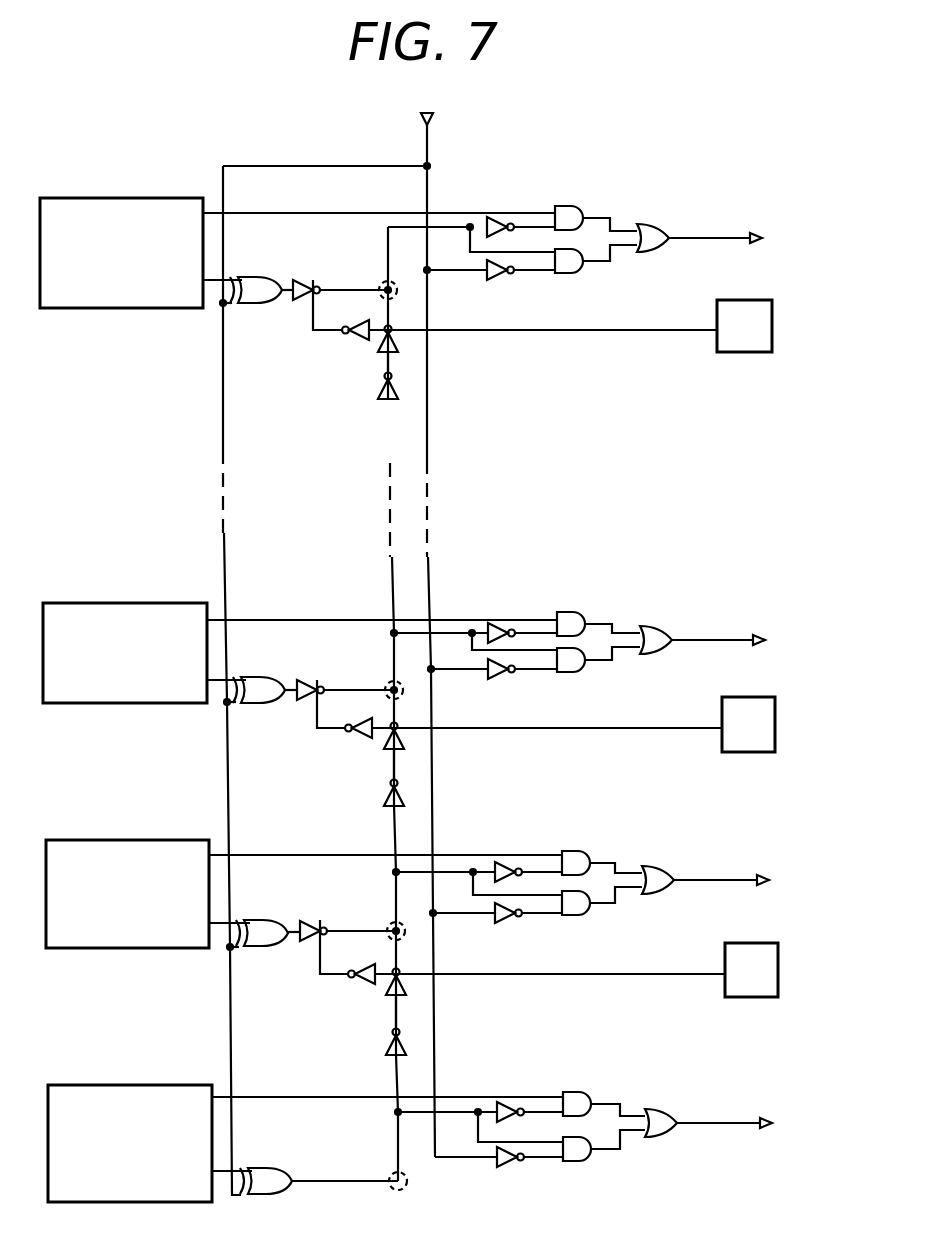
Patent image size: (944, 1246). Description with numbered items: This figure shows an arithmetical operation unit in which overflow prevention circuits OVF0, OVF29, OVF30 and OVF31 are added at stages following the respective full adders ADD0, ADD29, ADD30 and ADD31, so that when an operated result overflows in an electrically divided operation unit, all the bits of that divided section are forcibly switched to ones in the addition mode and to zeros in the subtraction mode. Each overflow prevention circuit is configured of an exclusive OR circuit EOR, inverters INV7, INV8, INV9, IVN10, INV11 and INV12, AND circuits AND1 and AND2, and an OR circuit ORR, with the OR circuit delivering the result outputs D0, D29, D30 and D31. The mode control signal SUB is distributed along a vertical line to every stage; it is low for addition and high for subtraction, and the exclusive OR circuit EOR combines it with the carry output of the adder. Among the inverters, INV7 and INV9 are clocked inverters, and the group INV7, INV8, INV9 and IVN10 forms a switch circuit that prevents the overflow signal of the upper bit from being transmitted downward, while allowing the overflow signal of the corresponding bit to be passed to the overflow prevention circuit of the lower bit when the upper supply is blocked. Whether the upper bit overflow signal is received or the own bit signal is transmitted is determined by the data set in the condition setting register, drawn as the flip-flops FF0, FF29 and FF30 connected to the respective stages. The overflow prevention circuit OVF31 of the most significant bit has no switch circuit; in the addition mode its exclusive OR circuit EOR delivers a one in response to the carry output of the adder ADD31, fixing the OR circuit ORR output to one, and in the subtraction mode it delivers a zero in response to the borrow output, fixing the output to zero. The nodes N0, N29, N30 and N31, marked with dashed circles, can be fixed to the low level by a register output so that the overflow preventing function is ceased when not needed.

The mode control signal SUB is at (424, 620).
The full adder ADD0 is at (121, 253).
The full adder ADD29 is at (125, 653).
The full adder ADD30 is at (127, 894).
The full adder ADD31 is at (130, 1143).
The exclusive OR circuit EOR is at (262, 303).
The clocked inverter INV7 is at (313, 280).
The inverter INV8 is at (352, 342).
The clocked inverter INV9 is at (398, 343).
The inverter IVN10 is at (398, 391).
The inverter INV11 is at (494, 217).
The inverter INV12 is at (496, 281).
The AND circuit AND1 is at (562, 205).
The AND circuit AND2 is at (568, 276).
The OR circuit ORR is at (643, 225).
The node N0 is at (379, 284).
The node N29 is at (385, 682).
The node N30 is at (387, 923).
The node N31 is at (389, 1173).
The flip-flop FF0 is at (742, 353).
The flip-flop FF29 is at (750, 753).
The flip-flop FF30 is at (752, 998).
The output data D0 is at (732, 240).
The output data D29 is at (740, 642).
The output data D30 is at (743, 882).
The output data D31 is at (746, 1125).
The overflow prevention circuit OVF0 is at (598, 374).
The overflow prevention circuit OVF29 is at (577, 770).
The overflow prevention circuit OVF30 is at (570, 1013).
The overflow prevention circuit OVF31 is at (565, 1215).